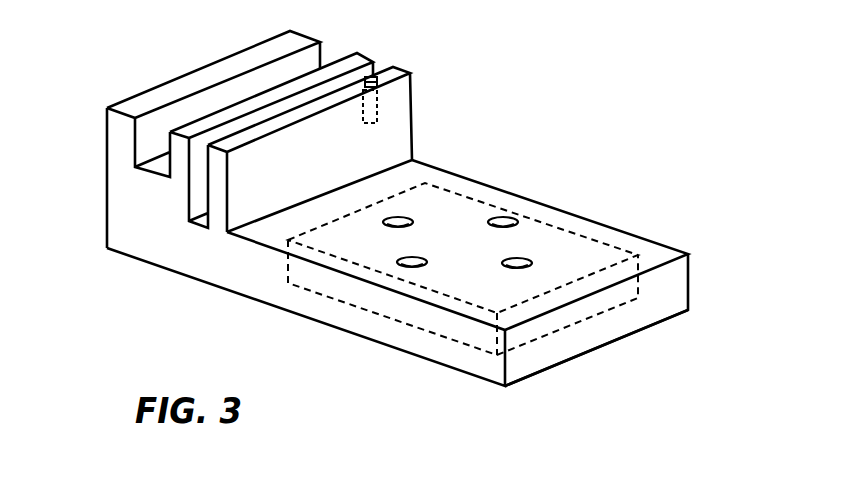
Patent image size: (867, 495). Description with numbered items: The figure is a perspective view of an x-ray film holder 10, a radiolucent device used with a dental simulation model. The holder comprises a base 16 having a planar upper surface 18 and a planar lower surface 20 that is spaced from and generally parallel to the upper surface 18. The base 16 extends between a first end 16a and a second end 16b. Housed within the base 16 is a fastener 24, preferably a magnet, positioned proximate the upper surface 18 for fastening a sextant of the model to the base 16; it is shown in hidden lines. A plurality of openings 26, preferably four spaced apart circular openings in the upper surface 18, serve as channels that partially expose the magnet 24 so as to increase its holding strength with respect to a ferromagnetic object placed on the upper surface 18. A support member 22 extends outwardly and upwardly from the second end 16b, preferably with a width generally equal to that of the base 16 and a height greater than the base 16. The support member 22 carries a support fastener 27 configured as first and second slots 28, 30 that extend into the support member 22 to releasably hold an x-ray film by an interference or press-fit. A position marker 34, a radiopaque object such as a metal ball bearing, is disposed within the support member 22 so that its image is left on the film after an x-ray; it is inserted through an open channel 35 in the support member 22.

The x-ray film holder 10 is at (567, 100).
The base 16 is at (680, 282).
The first end 16a is at (537, 357).
The second end 16b is at (216, 262).
The planar upper surface 18 is at (608, 230).
The planar lower surface 20 is at (622, 340).
The support member 22 is at (115, 192).
The fastener 24 is at (440, 322).
The openings 26 is at (399, 217).
The support fastener 27 is at (151, 66).
The first slot 28 is at (347, 78).
The second slot 30 is at (277, 73).
The position marker 34 is at (378, 100).
The open channel 35 is at (372, 77).